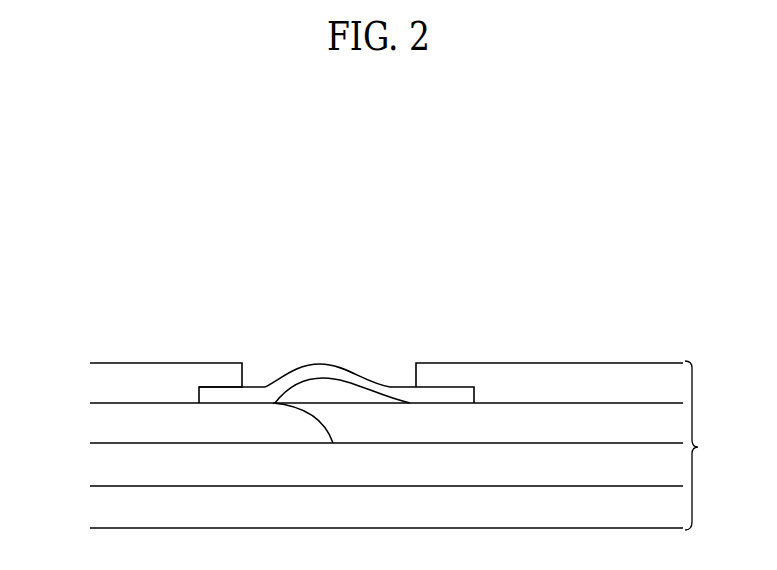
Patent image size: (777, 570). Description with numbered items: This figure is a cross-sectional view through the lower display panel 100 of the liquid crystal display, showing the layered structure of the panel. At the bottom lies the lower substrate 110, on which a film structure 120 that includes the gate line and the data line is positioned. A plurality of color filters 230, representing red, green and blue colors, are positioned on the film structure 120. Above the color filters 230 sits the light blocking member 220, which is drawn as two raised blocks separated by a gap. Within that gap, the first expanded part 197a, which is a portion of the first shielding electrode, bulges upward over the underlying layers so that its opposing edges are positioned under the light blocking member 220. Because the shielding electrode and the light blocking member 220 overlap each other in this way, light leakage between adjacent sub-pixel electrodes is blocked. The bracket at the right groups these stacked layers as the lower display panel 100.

The lower display panel 100 is at (711, 445).
The lower substrate 110 is at (105, 504).
The film structure 120 is at (105, 463).
The color filters 230 is at (105, 423).
The light blocking member 220 is at (105, 383).
The first expanded part 197a is at (283, 383).